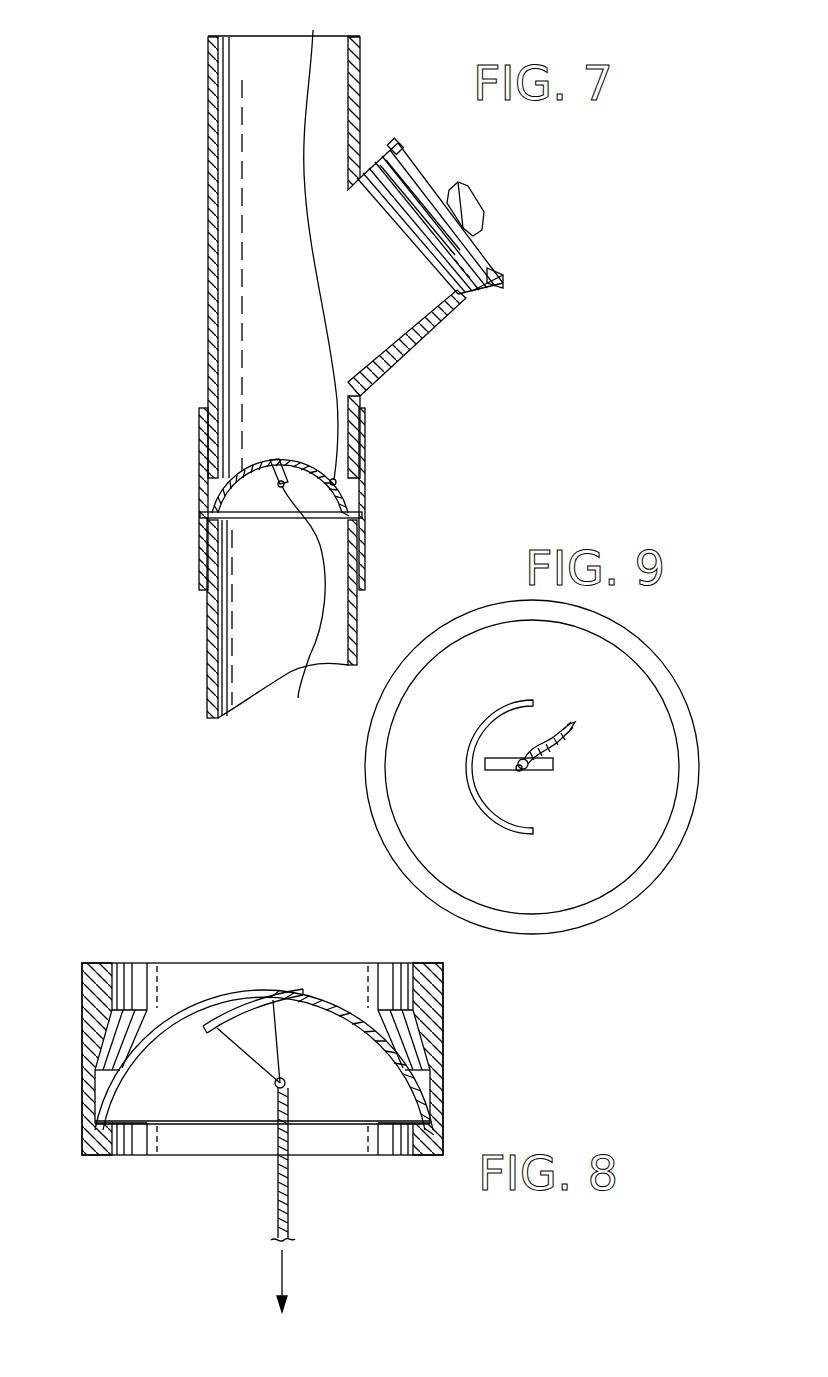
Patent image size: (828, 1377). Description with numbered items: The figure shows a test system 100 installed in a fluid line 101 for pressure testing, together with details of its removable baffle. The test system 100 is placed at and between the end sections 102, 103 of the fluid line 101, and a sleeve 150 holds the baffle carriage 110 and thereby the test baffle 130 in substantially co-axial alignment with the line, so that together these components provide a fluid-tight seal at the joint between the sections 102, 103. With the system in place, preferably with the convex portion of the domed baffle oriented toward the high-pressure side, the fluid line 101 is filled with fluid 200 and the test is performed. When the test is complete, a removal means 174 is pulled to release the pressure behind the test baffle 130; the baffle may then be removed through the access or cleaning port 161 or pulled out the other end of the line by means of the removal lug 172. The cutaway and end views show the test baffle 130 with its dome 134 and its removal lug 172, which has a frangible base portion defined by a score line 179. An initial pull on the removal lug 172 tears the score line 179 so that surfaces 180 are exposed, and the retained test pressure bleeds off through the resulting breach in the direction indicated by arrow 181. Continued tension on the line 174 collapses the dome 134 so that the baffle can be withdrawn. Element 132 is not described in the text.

In FIG. 7, the test system 100 is at (380, 499).
In FIG. 7, the fluid line 101 is at (208, 210).
In FIG. 7, the end section 102 is at (208, 382).
In FIG. 7, the end section 103 is at (357, 637).
In FIG. 7, the baffle carriage 110 is at (200, 487).
In FIG. 7, the test baffle 130 is at (287, 503).
In FIG. 9, the test baffle 130 is at (693, 733).
In FIG. 8, the test baffle 130 is at (337, 1000).
In FIG. 9, the rim of valve member 132 is at (610, 900).
In FIG. 9, the dome 134 is at (567, 881).
In FIG. 8, the dome 134 is at (372, 1107).
In FIG. 7, the sleeve 150 is at (365, 450).
In FIG. 7, the access or cleaning port 161 is at (468, 297).
In FIG. 7, the removal lug 172 is at (273, 487).
In FIG. 9, the removal lug 172 is at (555, 763).
In FIG. 8, the removal lug 172 is at (243, 1060).
In FIG. 7, the removal means 174 is at (320, 50).
In FIG. 9, the removal means 174 is at (556, 722).
In FIG. 8, the removal means 174 is at (287, 1202).
In FIG. 9, the score line 179 is at (515, 700).
In FIG. 8, the surfaces 180 is at (203, 1026).
In FIG. 8, the arrow 181 is at (193, 1040).
In FIG. 7, the fluid 200 is at (300, 291).